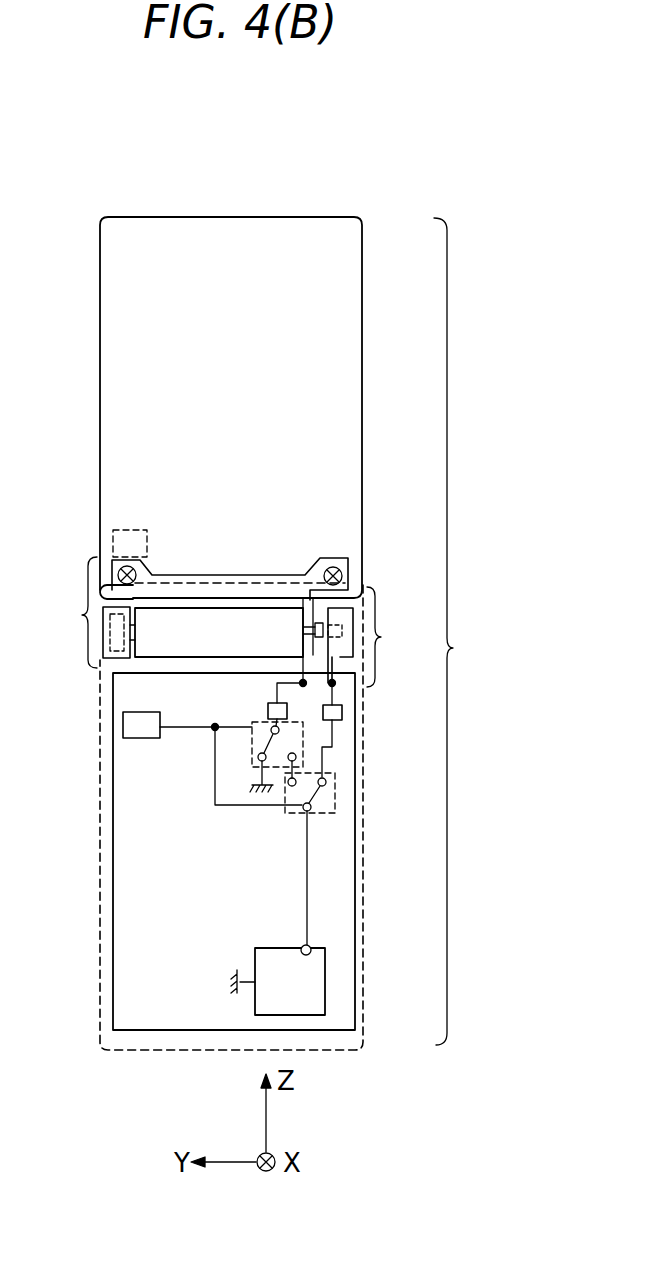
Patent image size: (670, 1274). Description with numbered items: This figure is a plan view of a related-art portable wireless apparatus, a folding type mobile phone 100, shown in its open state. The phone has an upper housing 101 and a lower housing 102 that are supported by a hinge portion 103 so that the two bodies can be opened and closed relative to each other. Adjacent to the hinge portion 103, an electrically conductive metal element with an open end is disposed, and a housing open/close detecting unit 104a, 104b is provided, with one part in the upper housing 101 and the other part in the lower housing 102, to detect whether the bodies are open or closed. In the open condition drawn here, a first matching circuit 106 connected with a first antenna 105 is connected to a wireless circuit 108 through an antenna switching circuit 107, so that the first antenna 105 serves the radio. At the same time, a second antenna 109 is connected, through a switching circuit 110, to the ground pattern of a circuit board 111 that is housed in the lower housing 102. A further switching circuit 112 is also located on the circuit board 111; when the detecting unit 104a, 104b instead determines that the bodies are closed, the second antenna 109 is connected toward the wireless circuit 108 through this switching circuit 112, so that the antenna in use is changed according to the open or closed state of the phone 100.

The folding type mobile phone 100 is at (378, 244).
The upper housing 101 is at (330, 221).
The lower housing 102 is at (366, 1020).
The hinge portion 103 is at (83, 608).
The housing open/close detecting unit 104a is at (135, 530).
The housing open/close detecting unit 104b is at (143, 738).
The first antenna 105 is at (464, 631).
The first matching circuit 106 is at (342, 713).
The antenna switching circuit 107 is at (336, 803).
The wireless circuit 108 is at (270, 952).
The second antenna 109 is at (264, 637).
The switching circuit 110 is at (268, 703).
The circuit board 111 is at (343, 961).
The switching circuit 112 is at (247, 760).